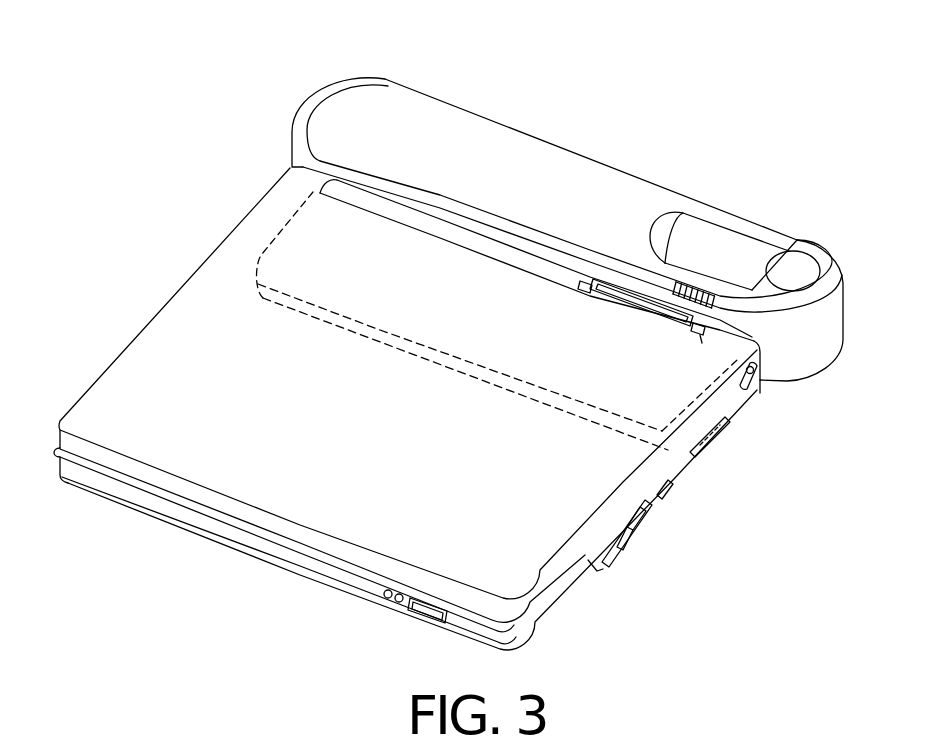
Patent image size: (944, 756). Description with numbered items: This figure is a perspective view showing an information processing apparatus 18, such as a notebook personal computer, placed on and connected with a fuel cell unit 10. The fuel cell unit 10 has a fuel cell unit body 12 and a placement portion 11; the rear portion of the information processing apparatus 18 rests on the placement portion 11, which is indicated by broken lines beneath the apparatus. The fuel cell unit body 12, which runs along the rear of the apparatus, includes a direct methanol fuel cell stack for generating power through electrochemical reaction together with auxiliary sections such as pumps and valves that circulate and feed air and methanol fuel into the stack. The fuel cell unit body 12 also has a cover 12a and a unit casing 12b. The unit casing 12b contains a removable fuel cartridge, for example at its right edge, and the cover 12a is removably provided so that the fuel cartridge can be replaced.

The fuel cell unit 10 is at (538, 98).
The placement portion 11 is at (303, 252).
The fuel cell unit body 12 is at (593, 162).
The cover 12a is at (814, 262).
The unit casing 12b is at (323, 83).
The information processing apparatus 18 is at (176, 526).